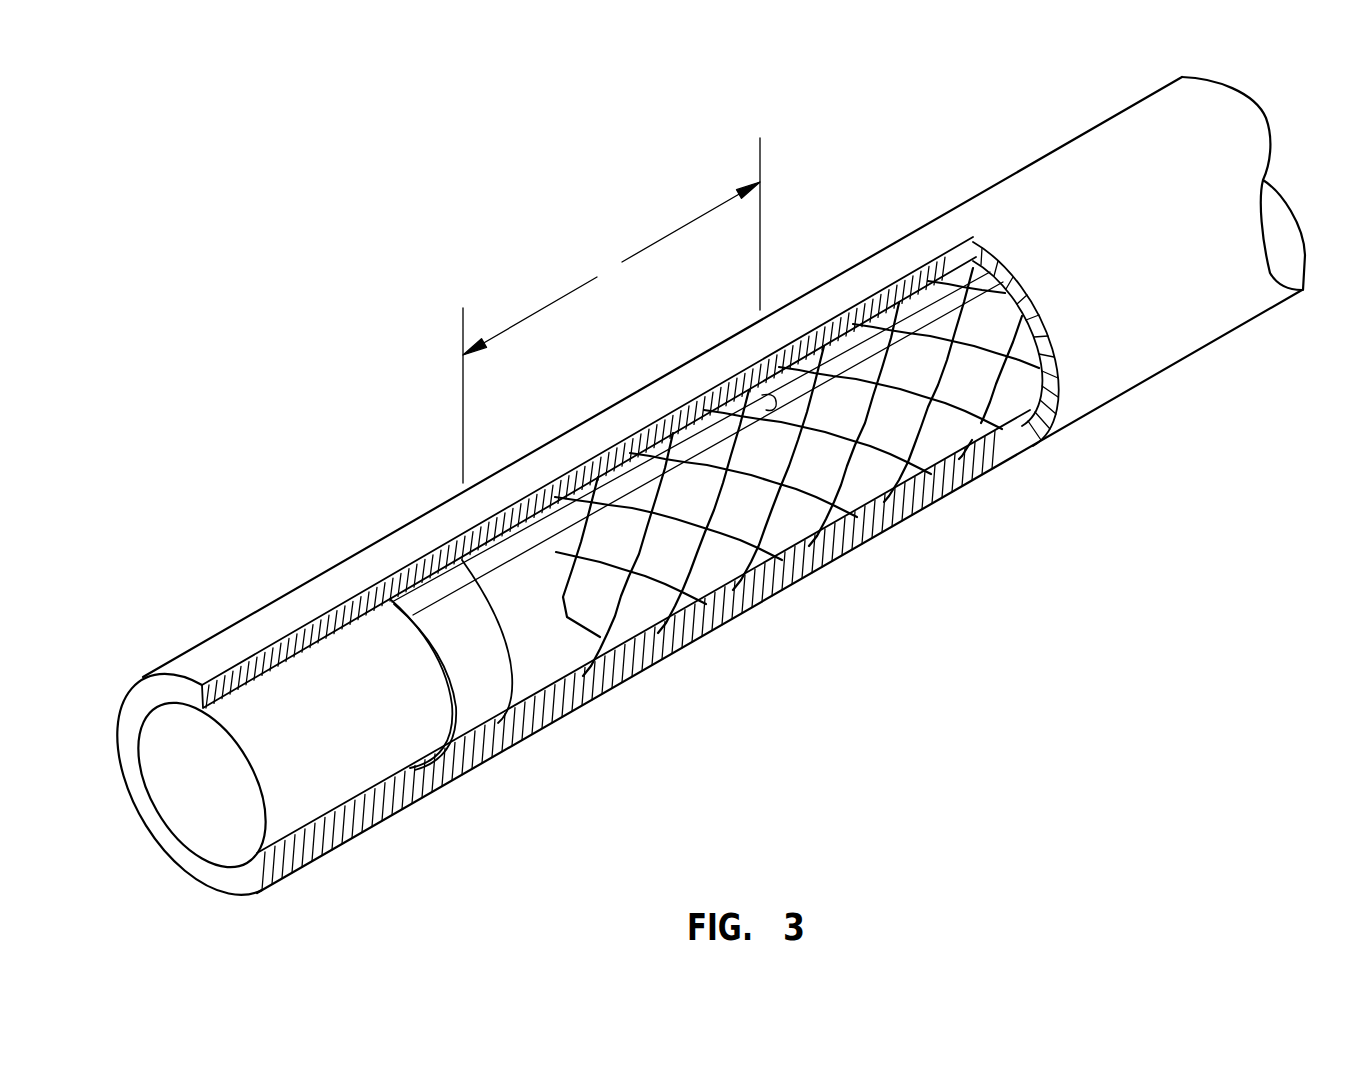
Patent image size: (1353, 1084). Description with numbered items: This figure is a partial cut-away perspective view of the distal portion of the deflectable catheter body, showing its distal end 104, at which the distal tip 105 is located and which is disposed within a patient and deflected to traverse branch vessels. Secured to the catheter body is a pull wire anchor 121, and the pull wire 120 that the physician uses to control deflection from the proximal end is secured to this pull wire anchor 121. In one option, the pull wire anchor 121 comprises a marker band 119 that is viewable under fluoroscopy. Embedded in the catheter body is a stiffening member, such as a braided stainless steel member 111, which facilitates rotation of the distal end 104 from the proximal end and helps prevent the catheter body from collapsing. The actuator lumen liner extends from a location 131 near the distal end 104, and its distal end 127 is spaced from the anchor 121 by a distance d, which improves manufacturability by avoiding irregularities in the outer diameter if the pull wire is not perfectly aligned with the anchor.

The distal end 104 is at (266, 609).
The distal tip 105 is at (203, 849).
The braided stainless steel member 111 is at (622, 487).
The marker band 119 is at (442, 632).
The pull wire 120 is at (622, 488).
The pull wire anchor 121 is at (480, 623).
The distal end of the actuator lumen liner 127 is at (928, 312).
The location 131 is at (742, 327).